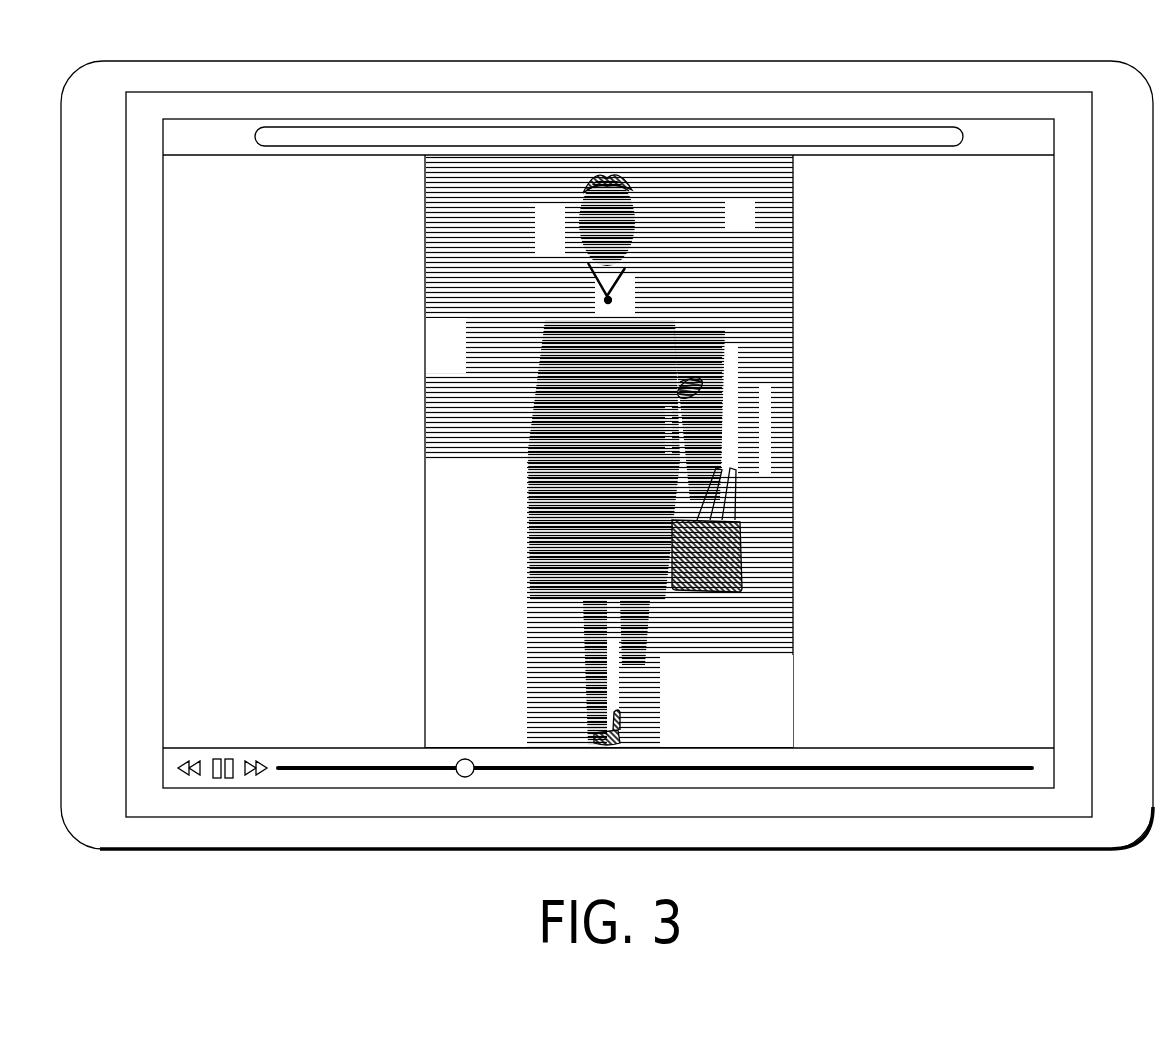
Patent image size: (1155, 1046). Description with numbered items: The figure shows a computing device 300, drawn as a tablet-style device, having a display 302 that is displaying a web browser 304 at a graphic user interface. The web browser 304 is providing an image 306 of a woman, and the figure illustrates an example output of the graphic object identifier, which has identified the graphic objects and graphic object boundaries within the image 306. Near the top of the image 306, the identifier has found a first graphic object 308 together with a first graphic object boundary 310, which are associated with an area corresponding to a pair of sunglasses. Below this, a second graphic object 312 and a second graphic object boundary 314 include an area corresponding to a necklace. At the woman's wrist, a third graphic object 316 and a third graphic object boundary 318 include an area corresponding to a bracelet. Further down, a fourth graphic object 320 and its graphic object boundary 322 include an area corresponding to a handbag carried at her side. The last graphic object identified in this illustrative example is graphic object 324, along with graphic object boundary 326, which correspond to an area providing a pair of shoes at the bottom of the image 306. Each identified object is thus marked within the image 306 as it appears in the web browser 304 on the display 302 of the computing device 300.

The computing device 300 is at (186, 61).
The display 302 is at (268, 92).
The web browser 304 is at (325, 119).
The image 306 is at (424, 266).
The first graphic object 308 is at (582, 173).
The first graphic object boundary 310 is at (633, 181).
The second graphic object 312 is at (602, 304).
The second graphic object boundary 314 is at (614, 300).
The third graphic object 316 is at (682, 380).
The third graphic object boundary 318 is at (705, 386).
The fourth graphic object 320 is at (690, 590).
The graphic object boundary 322 is at (672, 560).
The graphic object 324 is at (600, 730).
The graphic object boundary 326 is at (622, 728).